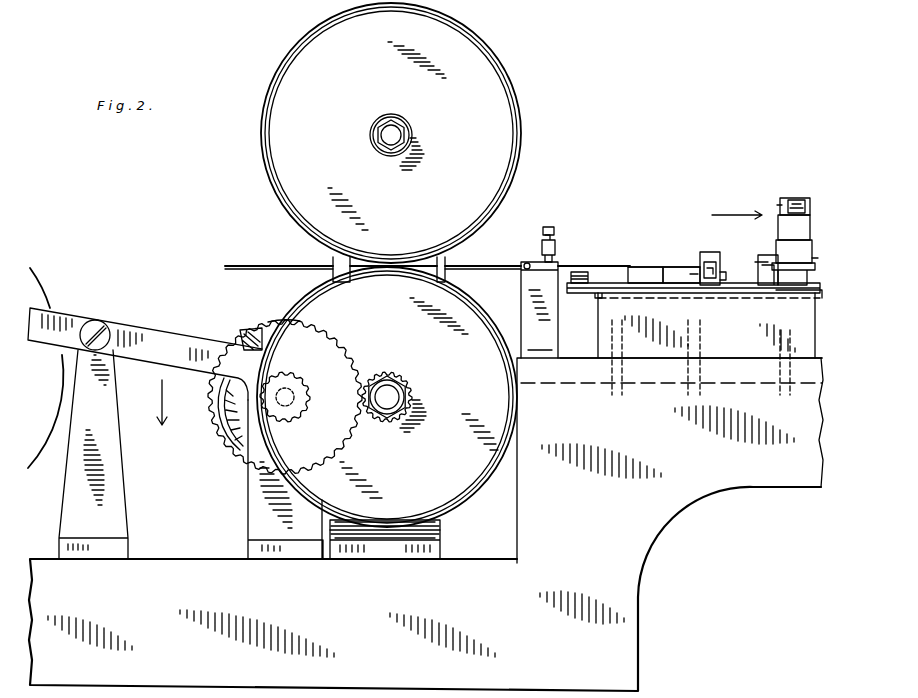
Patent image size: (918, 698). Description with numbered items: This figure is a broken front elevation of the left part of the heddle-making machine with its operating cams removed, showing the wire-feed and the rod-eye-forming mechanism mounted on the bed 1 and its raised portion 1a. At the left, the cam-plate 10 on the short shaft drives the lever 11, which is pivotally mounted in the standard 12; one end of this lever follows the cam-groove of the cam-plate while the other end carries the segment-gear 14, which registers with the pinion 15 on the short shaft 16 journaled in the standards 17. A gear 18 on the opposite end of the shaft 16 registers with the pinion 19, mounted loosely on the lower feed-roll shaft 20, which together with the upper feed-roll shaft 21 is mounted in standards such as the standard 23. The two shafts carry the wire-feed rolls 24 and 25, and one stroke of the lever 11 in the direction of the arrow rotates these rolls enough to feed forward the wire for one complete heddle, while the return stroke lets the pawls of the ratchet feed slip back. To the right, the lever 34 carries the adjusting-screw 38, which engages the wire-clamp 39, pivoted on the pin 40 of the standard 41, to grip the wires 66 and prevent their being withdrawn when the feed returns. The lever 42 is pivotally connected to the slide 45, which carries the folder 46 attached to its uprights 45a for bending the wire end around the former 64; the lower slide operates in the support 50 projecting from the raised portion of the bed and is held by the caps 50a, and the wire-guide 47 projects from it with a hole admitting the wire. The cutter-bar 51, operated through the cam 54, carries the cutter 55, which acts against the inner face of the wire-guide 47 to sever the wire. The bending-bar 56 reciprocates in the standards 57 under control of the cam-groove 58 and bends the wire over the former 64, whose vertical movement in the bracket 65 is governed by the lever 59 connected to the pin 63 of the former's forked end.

The bed 1 is at (425, 589).
The raised portion of the bed 1a is at (670, 441).
The cam-plate 10 is at (50, 300).
The lever 11 is at (145, 354).
The standard 12 is at (93, 454).
The segment-gear 14 is at (256, 329).
The pinion 15 is at (312, 408).
The short shaft 16 is at (285, 397).
The standards 17 is at (285, 479).
The gear 18 is at (276, 321).
The pinion 19 is at (406, 386).
The lower feed-roll shaft 20 is at (406, 398).
The upper feed-roll shaft 21 is at (397, 142).
The standard 23 is at (385, 539).
The wire-feed roll 24 is at (387, 397).
The wire-feed roll 25 is at (391, 142).
The lever 34 is at (541, 246).
The adjusting-screw 38 is at (548, 227).
The wire-clamp 39 is at (539, 310).
The pin 40 is at (524, 269).
The standard 41 is at (540, 342).
The lever 42 is at (589, 273).
The slide 45 is at (691, 320).
The uprights 45a is at (633, 275).
The folder 46 is at (673, 267).
The wire-guide 47 is at (681, 275).
The support 50 is at (720, 325).
The caps 50a is at (781, 296).
The cutter-bar 51 is at (721, 262).
The cam 54 is at (812, 268).
The cutter 55 is at (727, 274).
The bending-bar 56 is at (793, 274).
The standards 57 is at (766, 255).
The cam-groove 58 is at (760, 262).
The lever 59 is at (798, 200).
The pin 63 is at (780, 207).
The former 64 is at (794, 227).
The bracket 65 is at (794, 251).
The wires 66 is at (274, 266).